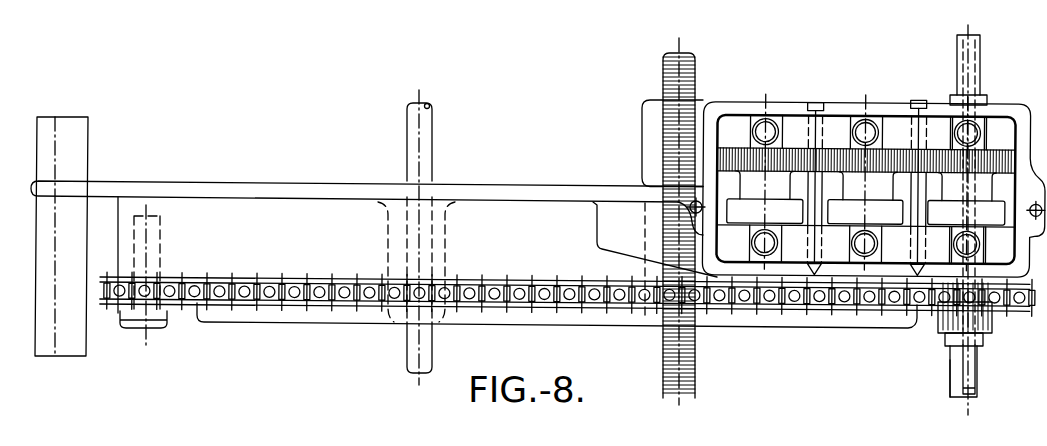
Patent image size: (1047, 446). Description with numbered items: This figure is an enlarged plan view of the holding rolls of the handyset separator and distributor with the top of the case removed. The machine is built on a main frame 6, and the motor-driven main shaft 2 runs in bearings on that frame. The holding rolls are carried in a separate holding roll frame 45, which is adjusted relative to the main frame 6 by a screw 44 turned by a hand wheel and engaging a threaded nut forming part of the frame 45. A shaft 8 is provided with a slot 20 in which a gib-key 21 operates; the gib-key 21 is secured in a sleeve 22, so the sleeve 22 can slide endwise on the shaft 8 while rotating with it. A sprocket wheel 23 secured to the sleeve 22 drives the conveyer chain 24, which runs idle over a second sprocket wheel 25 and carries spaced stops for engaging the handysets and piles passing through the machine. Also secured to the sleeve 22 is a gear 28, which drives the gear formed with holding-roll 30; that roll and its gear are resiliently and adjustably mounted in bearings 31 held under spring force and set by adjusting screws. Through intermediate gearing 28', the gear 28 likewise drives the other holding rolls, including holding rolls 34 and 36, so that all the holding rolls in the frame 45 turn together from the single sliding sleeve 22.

The main shaft 2 is at (429, 118).
The main frame 6 is at (61, 237).
The shaft 8 is at (953, 373).
The slot 20 is at (975, 385).
The gib-key 21 is at (978, 352).
The sleeve 22 is at (984, 340).
The sprocket wheel 23 is at (992, 319).
The conveyer chain 24 is at (481, 280).
The sprocket wheel 25 is at (170, 303).
The gear 28 is at (868, 173).
The intermediate gearing 28' is at (877, 171).
The holding-roll 30 is at (967, 198).
The bearings 31 is at (982, 191).
The holding roll 34 is at (865, 198).
The holding roll 36 is at (765, 197).
The screw 44 is at (695, 68).
The holding roll frame 45 is at (477, 187).